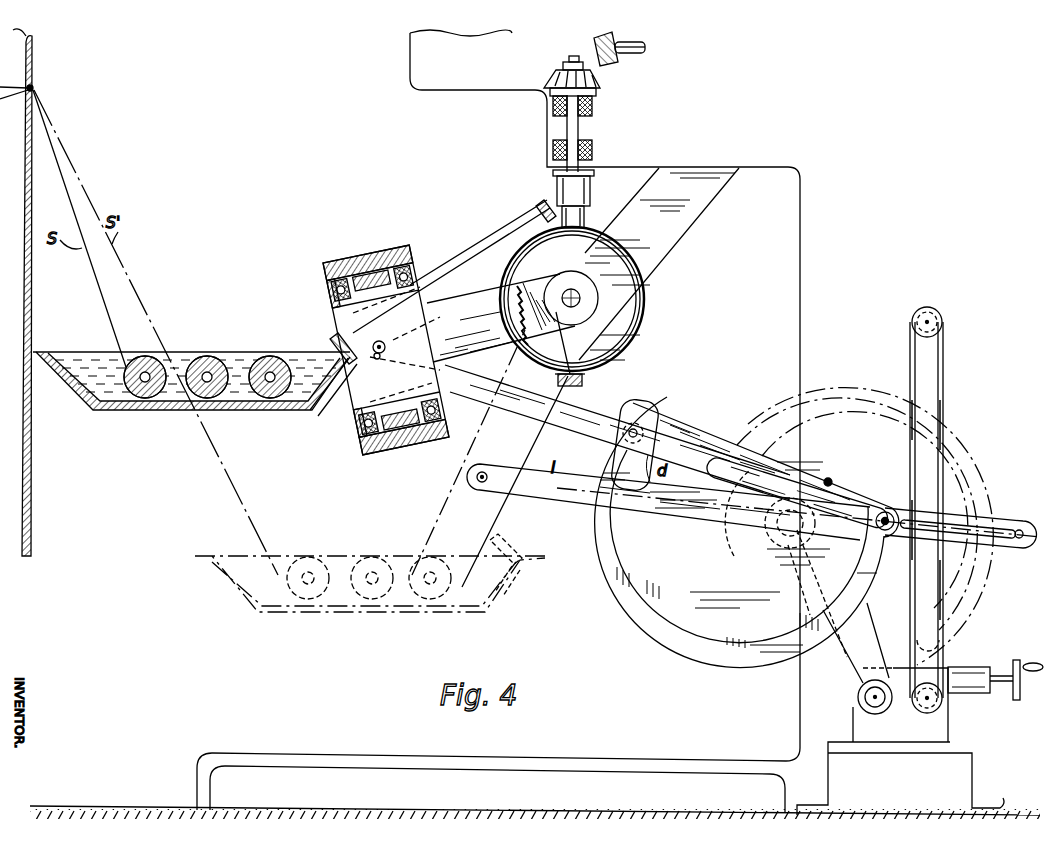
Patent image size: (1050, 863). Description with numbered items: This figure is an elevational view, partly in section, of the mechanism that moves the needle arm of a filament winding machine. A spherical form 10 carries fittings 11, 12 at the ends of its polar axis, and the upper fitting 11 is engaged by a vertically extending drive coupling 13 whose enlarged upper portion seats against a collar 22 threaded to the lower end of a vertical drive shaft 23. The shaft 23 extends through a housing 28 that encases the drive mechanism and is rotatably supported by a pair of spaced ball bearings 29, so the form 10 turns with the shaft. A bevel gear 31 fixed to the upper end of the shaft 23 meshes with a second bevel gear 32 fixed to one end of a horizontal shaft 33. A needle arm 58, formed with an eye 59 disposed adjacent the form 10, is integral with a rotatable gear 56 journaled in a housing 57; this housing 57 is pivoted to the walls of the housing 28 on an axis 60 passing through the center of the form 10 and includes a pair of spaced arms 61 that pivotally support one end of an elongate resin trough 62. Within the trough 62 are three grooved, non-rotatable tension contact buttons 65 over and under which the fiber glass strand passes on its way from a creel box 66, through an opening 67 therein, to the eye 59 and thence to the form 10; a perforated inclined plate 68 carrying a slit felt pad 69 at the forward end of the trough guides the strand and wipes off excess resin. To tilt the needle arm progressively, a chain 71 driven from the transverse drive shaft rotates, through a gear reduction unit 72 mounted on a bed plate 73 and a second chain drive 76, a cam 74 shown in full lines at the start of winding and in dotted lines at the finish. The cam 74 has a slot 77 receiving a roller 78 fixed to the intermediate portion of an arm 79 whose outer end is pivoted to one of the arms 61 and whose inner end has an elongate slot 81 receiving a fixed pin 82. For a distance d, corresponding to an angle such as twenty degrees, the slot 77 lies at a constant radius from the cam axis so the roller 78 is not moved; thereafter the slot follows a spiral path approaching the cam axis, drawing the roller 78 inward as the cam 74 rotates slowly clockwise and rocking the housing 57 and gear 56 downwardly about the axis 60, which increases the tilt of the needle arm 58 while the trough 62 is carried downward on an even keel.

The spherical form 10 is at (645, 300).
The fitting 11 is at (602, 229).
The fitting 12 is at (587, 383).
The drive coupling 13 is at (585, 216).
The collar 22 is at (590, 189).
The vertical drive shaft 23 is at (580, 128).
The housing 28 is at (551, 128).
The ball bearings 29 is at (592, 106).
The bevel gear 31 is at (552, 74).
The second bevel gear 32 is at (594, 40).
The horizontal shaft 33 is at (639, 53).
The rotatable gear 56 is at (388, 252).
The housing 57 is at (553, 358).
The needle arm 58 is at (478, 250).
The eye 59 is at (547, 200).
The axis 60 is at (637, 318).
The arms 61 is at (512, 288).
The resin trough 62 is at (150, 410).
The tension contact buttons 65 is at (252, 352).
The creel box 66 is at (30, 490).
The opening 67 is at (36, 86).
The perforated inclined plate 68 is at (343, 340).
The pad 69 is at (338, 352).
The chain 71 is at (944, 386).
The gear reduction unit 72 is at (862, 728).
The bed plate 73 is at (965, 781).
The cam 74 is at (678, 418).
The second chain drive 76 is at (848, 682).
The slot 77 is at (675, 628).
The roller 78 is at (632, 423).
The arm 79 is at (582, 456).
The elongate slot 81 is at (1013, 528).
The fixed pin 82 is at (889, 511).